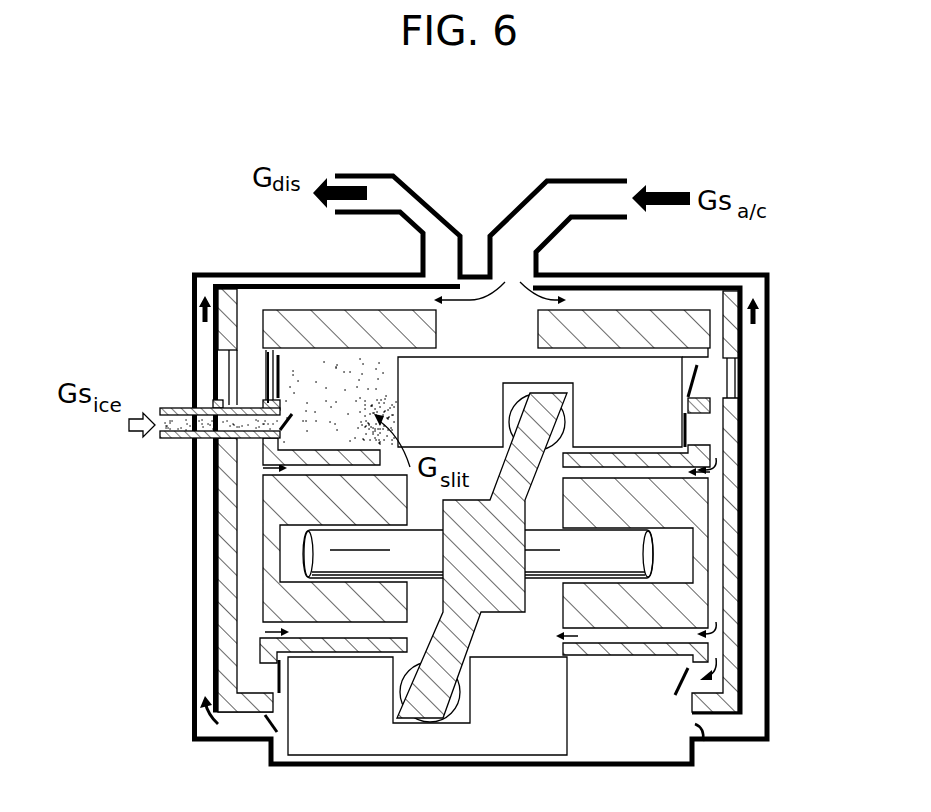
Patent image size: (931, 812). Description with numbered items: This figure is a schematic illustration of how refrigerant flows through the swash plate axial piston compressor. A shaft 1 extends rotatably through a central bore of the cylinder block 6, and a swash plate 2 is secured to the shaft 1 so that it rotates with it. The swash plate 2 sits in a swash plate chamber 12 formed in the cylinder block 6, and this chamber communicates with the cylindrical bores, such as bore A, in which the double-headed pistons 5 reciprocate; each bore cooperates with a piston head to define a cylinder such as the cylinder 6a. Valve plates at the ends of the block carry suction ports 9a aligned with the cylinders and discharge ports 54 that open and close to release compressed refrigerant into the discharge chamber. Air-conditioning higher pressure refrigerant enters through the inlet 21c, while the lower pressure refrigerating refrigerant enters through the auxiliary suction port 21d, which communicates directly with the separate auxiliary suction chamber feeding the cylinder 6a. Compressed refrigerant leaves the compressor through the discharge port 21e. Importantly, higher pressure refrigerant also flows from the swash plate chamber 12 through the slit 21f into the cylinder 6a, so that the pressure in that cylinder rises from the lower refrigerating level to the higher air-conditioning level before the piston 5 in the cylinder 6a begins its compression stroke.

The shaft 1 is at (540, 570).
The swash plate 2 is at (420, 712).
The piston 5 is at (468, 370).
The cylinder block 6 is at (687, 332).
The cylinder 6a is at (294, 355).
The suction port 9a is at (300, 441).
The swash plate chamber 12 is at (497, 642).
The air conditioning gas inlet duct 21c is at (593, 177).
The auxiliary suction port 21d is at (178, 408).
The discharge port 21e is at (353, 173).
The slit 21f is at (381, 455).
The discharge port 54 is at (270, 370).
The cylindrical bore A is at (287, 420).